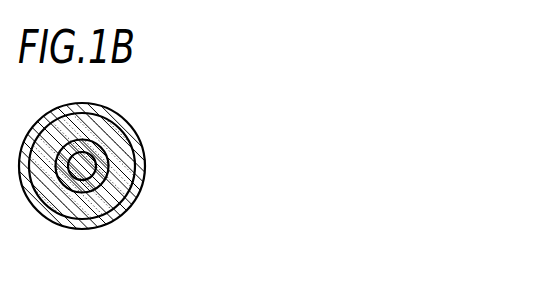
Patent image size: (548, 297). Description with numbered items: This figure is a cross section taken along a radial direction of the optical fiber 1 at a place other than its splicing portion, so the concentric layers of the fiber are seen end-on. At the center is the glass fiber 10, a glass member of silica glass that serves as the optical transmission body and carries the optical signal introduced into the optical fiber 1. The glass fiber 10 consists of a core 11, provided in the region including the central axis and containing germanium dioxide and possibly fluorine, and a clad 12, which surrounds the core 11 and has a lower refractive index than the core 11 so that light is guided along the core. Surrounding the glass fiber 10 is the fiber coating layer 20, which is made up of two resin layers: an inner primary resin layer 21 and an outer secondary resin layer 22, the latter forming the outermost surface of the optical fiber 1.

The optical fiber 1 is at (170, 168).
The glass fiber 10 is at (160, 189).
The core 11 is at (92, 176).
The clad 12 is at (102, 166).
The fiber coating layer 20 is at (141, 164).
The primary resin layer 21 is at (210, 101).
The secondary resin layer 22 is at (128, 126).